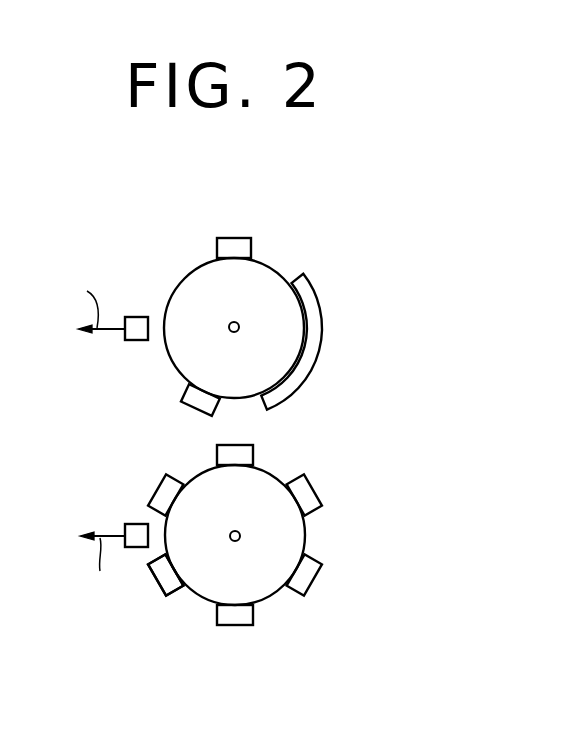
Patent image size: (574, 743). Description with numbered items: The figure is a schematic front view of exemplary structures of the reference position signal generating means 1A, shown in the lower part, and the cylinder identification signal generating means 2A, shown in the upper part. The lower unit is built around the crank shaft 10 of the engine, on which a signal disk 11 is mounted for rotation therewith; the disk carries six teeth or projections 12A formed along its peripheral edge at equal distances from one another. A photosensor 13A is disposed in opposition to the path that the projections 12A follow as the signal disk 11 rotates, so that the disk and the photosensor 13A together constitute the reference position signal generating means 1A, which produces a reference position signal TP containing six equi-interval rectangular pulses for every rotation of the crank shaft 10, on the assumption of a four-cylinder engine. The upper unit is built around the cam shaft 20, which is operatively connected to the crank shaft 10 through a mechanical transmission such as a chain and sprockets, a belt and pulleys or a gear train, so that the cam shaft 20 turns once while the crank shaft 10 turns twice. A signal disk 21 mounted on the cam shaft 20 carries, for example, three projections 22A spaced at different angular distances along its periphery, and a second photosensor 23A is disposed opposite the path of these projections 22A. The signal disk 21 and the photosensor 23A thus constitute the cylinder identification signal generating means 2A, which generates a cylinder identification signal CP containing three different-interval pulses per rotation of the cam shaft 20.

The reference position signal generating means 1A is at (347, 545).
The crank shaft 10 is at (238, 541).
The signal disk 11 is at (265, 490).
The teeth or projections 12A is at (166, 593).
The photosensor 13A is at (133, 523).
The cylinder identification signal generating means 2A is at (347, 314).
The cam shaft 20 is at (229, 323).
The signal disk 21 is at (276, 270).
The projections 22A is at (236, 238).
The second photosensor 23A is at (134, 341).